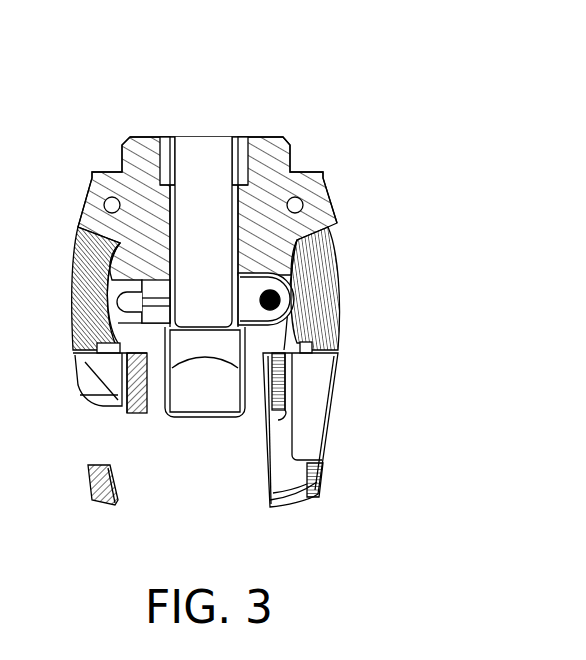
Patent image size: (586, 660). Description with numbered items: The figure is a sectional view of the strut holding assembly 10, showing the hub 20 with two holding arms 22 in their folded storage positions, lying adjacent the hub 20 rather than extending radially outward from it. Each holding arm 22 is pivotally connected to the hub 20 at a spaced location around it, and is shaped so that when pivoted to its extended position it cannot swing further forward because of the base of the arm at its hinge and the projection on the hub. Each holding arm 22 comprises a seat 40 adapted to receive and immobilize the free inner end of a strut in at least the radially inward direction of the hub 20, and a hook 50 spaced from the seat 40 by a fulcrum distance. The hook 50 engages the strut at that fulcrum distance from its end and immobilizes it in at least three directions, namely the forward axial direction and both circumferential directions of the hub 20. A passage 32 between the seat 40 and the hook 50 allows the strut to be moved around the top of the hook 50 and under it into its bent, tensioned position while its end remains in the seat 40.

The strut holding assembly 10 is at (205, 118).
The hub 20 is at (253, 137).
The holding arm 22 is at (338, 282).
The seat 40 is at (307, 352).
The passage 32 is at (293, 420).
The hook 50 is at (268, 494).